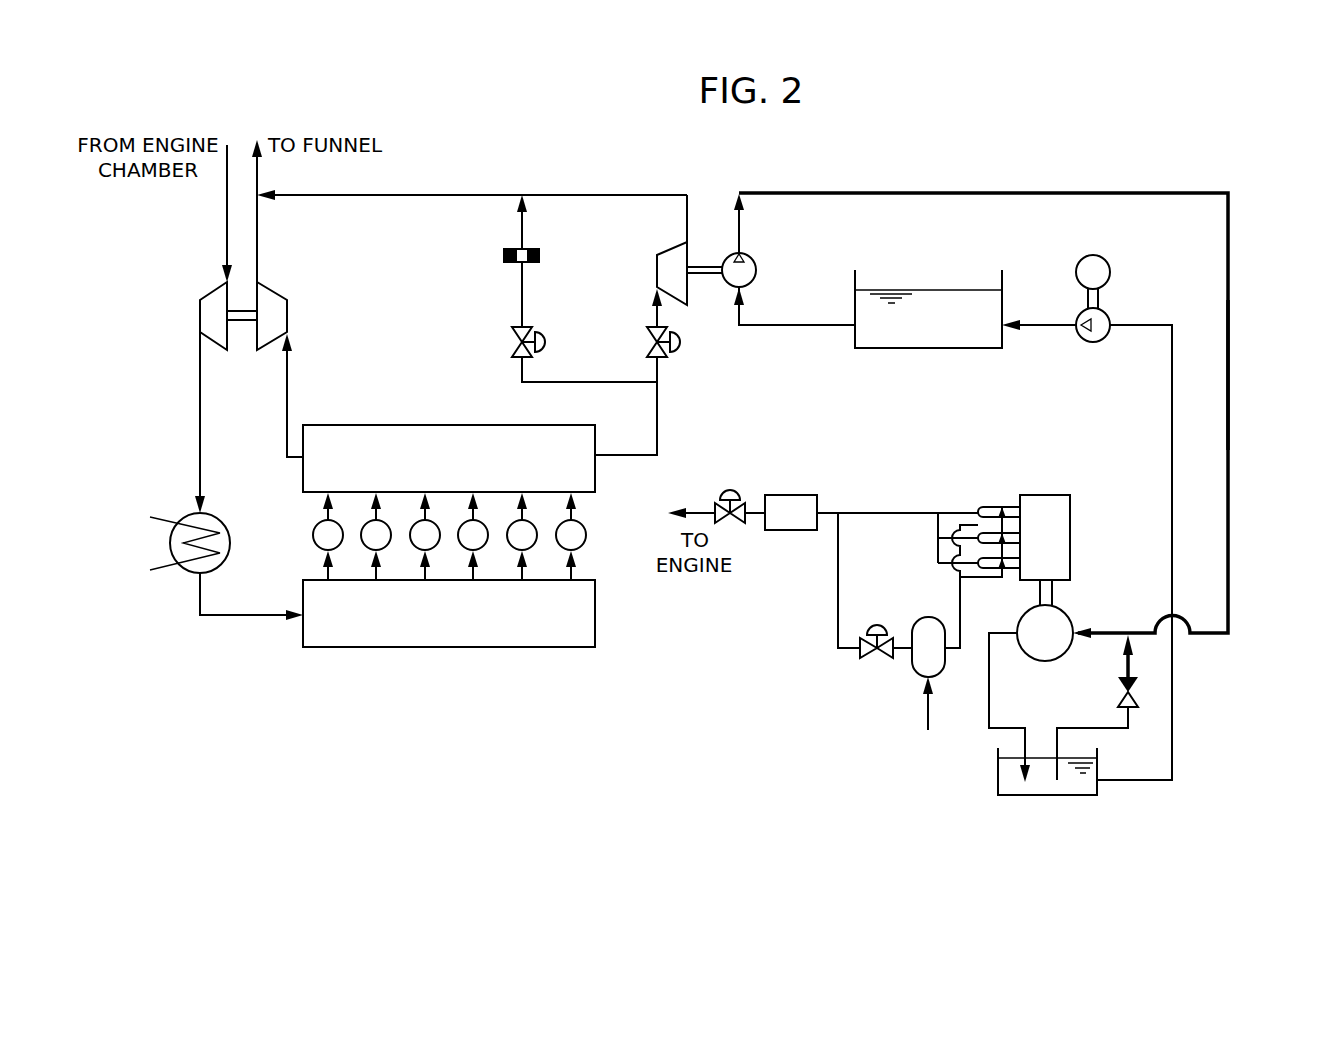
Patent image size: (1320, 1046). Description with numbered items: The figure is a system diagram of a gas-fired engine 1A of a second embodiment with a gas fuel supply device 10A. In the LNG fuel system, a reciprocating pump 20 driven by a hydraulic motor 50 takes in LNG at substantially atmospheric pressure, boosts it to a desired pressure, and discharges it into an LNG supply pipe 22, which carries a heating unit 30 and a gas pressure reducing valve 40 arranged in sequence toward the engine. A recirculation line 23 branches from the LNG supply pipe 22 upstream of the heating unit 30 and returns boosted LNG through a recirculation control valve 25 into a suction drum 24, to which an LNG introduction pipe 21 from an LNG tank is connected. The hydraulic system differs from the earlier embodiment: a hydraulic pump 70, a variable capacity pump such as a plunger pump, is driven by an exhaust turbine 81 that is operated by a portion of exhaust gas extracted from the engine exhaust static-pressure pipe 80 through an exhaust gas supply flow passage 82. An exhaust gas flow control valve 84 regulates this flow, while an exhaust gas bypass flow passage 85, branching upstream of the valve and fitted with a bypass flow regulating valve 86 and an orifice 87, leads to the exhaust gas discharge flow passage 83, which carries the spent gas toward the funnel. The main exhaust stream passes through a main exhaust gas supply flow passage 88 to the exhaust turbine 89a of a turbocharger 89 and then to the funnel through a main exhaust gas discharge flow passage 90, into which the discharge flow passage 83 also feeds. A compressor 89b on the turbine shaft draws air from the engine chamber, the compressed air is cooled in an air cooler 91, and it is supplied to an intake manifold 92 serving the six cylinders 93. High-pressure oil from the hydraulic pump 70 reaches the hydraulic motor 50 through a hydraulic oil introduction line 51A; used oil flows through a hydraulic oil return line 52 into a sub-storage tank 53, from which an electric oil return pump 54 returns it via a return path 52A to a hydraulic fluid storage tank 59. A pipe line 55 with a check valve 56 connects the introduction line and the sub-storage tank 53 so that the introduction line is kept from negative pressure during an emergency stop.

The gas-fired engine 1A is at (1055, 168).
The gas fuel supply device 10A is at (786, 662).
The reciprocating pump 20 is at (1046, 495).
The LNG introduction pipe 21 is at (927, 717).
The LNG supply pipe 22 is at (897, 513).
The recirculation line 23 is at (837, 585).
The suction drum 24 is at (912, 664).
The recirculation control valve 25 is at (877, 622).
The heating unit 30 is at (790, 495).
The gas pressure reducing valve 40 is at (730, 489).
The hydraulic motor 50 is at (1020, 616).
The hydraulic oil introduction line 51A is at (1230, 347).
The hydraulic oil return line 52 is at (990, 706).
The return line 52A is at (1175, 720).
The sub-storage tank 53 is at (1057, 797).
The electric oil return pump 54 is at (1093, 344).
The pipe line 55 is at (1085, 728).
The check valve 56 is at (1131, 712).
The hydraulic fluid storage tank 59 is at (962, 350).
The hydraulic pump 70 is at (757, 259).
The engine exhaust static-pressure pipe 80 is at (441, 425).
The exhaust turbine 81 is at (656, 270).
The exhaust gas supply flow passage 82 is at (658, 398).
The exhaust gas discharge flow passage 83 is at (613, 194).
The exhaust gas flow control valve 84 is at (690, 343).
The exhaust gas bypass flow passage 85 is at (604, 382).
The bypass flow regulating valve 86 is at (548, 340).
The orifice 87 is at (503, 252).
The main exhaust gas supply flow passage 88 is at (289, 380).
The turbocharger 89 is at (255, 360).
The exhaust turbine 89a is at (281, 299).
The compressor 89b is at (214, 292).
The main exhaust gas discharge flow passage 90 is at (259, 227).
The air cooler 91 is at (229, 523).
The intake manifold 92 is at (474, 650).
The cylinder 93 is at (588, 544).